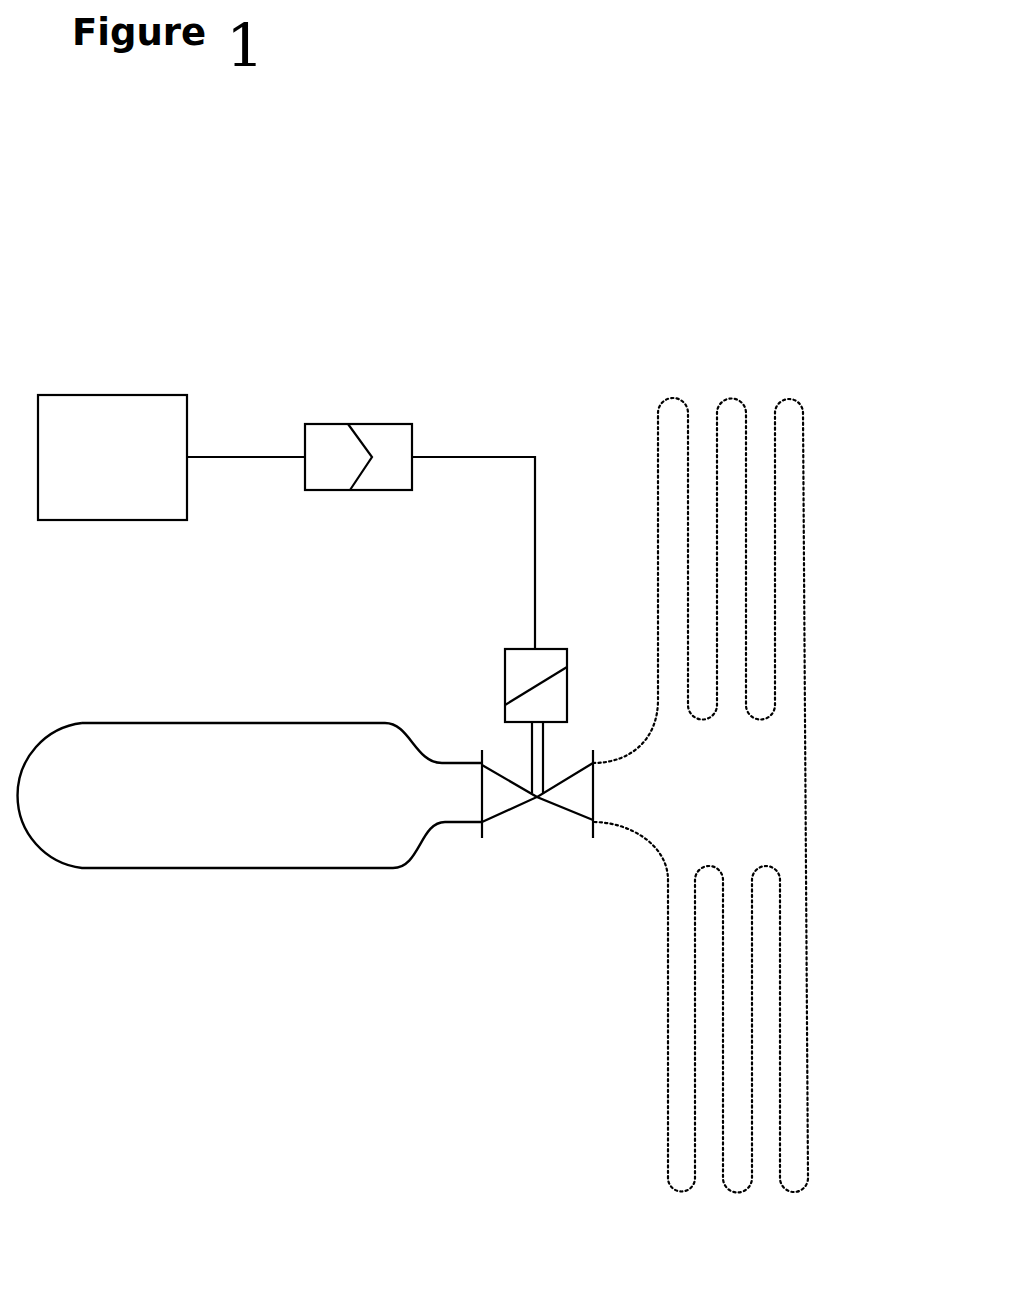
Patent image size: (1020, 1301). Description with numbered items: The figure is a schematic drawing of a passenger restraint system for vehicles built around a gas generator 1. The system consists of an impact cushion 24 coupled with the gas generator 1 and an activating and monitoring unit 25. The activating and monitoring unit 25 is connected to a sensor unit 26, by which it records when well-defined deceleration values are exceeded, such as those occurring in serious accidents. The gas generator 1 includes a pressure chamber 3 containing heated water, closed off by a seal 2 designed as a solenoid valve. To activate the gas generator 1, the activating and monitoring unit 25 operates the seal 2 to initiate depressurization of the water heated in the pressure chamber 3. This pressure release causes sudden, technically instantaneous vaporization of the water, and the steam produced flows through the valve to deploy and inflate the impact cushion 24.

The gas generator 1 is at (250, 845).
The seal 2 is at (515, 678).
The pressure chamber 3 is at (250, 795).
The impact cushion 24 is at (740, 1003).
The activating and monitoring unit 25 is at (375, 440).
The sensor unit 26 is at (155, 405).